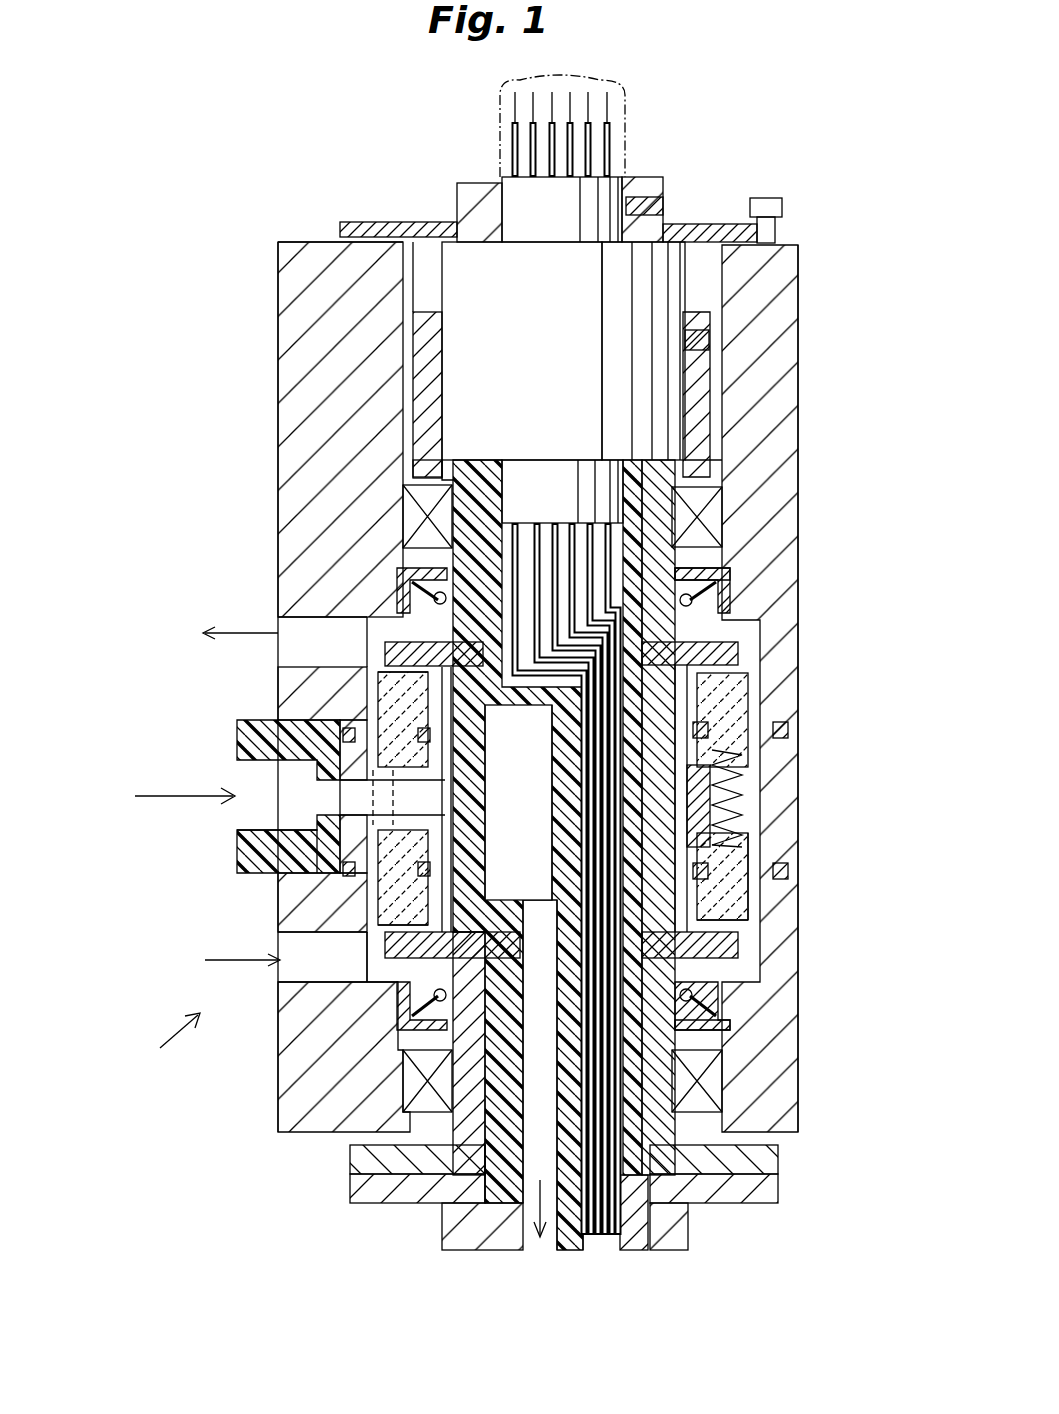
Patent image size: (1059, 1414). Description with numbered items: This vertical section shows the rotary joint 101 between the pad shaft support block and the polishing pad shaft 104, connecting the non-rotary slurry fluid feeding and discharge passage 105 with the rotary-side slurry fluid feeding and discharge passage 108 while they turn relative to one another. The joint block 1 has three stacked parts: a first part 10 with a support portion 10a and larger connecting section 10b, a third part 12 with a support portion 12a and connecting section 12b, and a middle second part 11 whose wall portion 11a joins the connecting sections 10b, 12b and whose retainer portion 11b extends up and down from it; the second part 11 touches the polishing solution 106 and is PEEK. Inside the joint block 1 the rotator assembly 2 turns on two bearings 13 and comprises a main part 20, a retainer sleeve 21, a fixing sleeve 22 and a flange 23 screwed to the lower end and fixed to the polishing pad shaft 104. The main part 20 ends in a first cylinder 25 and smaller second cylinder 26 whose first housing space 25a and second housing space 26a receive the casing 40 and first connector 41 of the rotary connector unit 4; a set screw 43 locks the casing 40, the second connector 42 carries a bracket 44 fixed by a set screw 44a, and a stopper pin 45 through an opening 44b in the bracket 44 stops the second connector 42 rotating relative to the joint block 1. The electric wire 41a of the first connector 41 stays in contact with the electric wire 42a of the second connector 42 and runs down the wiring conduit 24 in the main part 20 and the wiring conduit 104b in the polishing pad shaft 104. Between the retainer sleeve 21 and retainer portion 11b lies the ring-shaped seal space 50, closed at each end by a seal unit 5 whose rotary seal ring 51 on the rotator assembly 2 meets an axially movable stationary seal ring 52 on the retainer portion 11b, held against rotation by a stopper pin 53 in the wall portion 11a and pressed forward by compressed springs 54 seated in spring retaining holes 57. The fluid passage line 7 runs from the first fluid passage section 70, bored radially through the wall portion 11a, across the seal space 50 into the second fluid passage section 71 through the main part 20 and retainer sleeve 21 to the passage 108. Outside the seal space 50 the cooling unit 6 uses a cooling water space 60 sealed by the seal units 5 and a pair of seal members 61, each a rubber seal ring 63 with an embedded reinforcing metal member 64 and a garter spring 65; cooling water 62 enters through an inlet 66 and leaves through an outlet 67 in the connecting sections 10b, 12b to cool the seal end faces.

The rotary joint 101 is at (300, 172).
The joint block 1 is at (802, 270).
The rotator assembly 2 is at (716, 440).
The rotary connector unit 4 is at (430, 262).
The seal unit 5 is at (732, 652).
The cooling unit 6 is at (164, 1033).
The fluid passage line 7 is at (468, 1055).
The first part 10 is at (272, 362).
The support portion 10a is at (296, 280).
The connecting section 10b is at (300, 682).
The second part 11 is at (776, 855).
The wall portion 11a is at (256, 866).
The retainer portion 11b is at (487, 798).
The third part 12 is at (292, 1124).
The support portion 12a is at (288, 1102).
The connecting section 12b is at (300, 930).
The bearing 13 is at (725, 520).
The main part 20 is at (735, 522).
The retainer sleeve 21 is at (700, 918).
The fixing sleeve 22 is at (716, 1204).
The flange 23 is at (768, 1158).
The wiring conduit 24 is at (700, 735).
The first cylinder 25 is at (705, 320).
The first housing space 25a is at (430, 350).
The second cylinder 26 is at (430, 495).
The second housing space 26a is at (580, 490).
The casing 40 is at (662, 393).
The first connector 41 is at (470, 482).
The electric wire 41a is at (630, 1246).
The second connector 42 is at (515, 205).
The electric wire 42a is at (606, 105).
The set screw 43 is at (706, 340).
The bracket 44 is at (456, 230).
The set screw 44a is at (665, 206).
The opening 44b is at (785, 236).
The stopper pin 45 is at (770, 200).
The seal space 50 is at (372, 903).
The rotary seal ring 51 is at (480, 705).
The stationary seal ring 52 is at (480, 745).
The stopper pin 53 is at (385, 740).
The compressed spring 54 is at (735, 805).
The spring retaining hole 57 is at (745, 795).
The cooling water space 60 is at (738, 690).
The seal member 61 is at (400, 590).
The cooling water 62 is at (258, 785).
The seal ring 63 is at (692, 602).
The reinforcing metal member 64 is at (726, 586).
The garter spring 65 is at (735, 625).
The inlet 66 is at (392, 998).
The outlet 67 is at (392, 608).
The first fluid passage section 70 is at (262, 770).
The second fluid passage section 71 is at (470, 1196).
The polishing pad shaft 104 is at (445, 1210).
The wiring conduit 104b is at (656, 1252).
The slurry fluid feeding and discharge passage 105 is at (167, 773).
The polishing solution 106 is at (226, 820).
The slurry fluid feeding and discharge passage 108 is at (560, 1248).